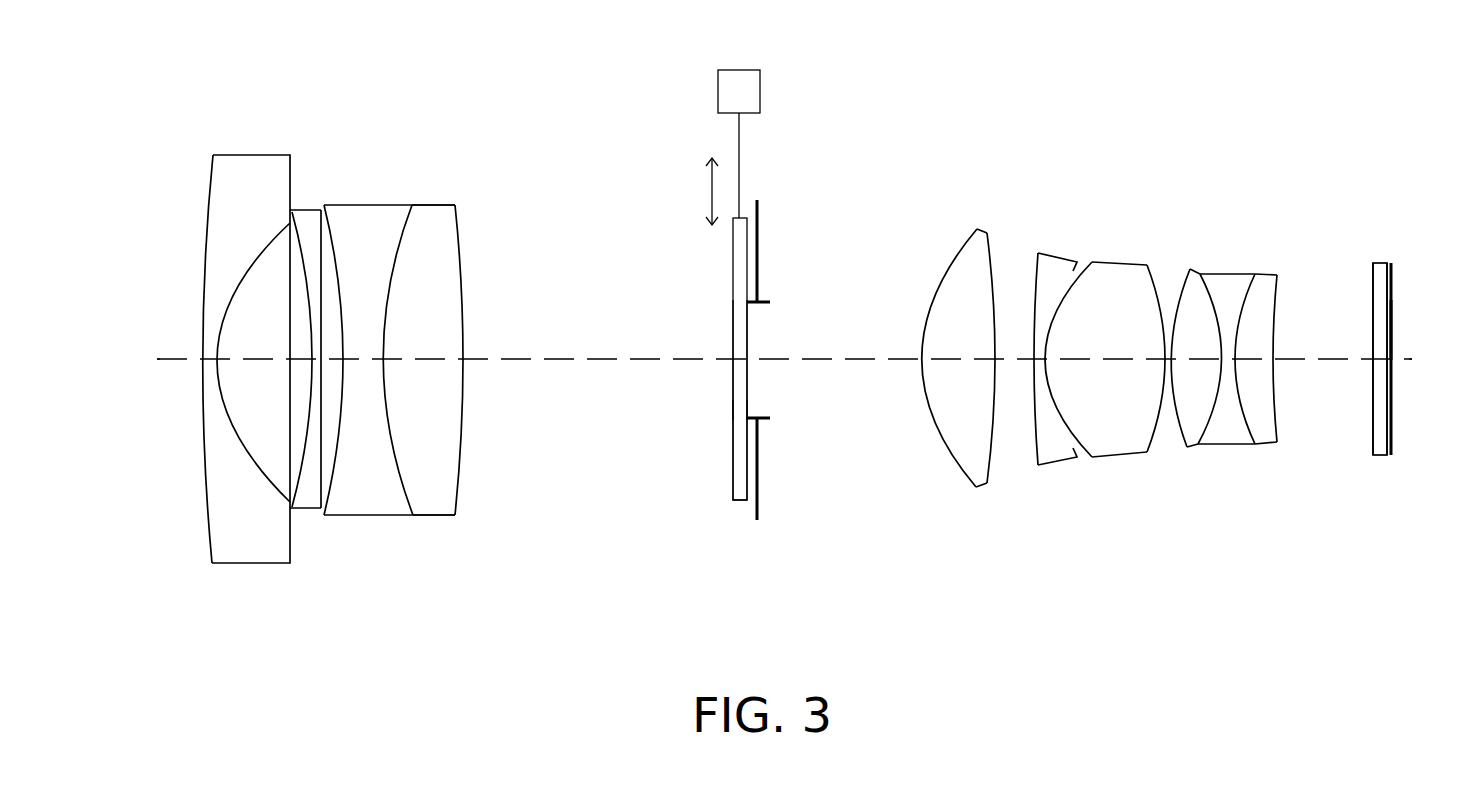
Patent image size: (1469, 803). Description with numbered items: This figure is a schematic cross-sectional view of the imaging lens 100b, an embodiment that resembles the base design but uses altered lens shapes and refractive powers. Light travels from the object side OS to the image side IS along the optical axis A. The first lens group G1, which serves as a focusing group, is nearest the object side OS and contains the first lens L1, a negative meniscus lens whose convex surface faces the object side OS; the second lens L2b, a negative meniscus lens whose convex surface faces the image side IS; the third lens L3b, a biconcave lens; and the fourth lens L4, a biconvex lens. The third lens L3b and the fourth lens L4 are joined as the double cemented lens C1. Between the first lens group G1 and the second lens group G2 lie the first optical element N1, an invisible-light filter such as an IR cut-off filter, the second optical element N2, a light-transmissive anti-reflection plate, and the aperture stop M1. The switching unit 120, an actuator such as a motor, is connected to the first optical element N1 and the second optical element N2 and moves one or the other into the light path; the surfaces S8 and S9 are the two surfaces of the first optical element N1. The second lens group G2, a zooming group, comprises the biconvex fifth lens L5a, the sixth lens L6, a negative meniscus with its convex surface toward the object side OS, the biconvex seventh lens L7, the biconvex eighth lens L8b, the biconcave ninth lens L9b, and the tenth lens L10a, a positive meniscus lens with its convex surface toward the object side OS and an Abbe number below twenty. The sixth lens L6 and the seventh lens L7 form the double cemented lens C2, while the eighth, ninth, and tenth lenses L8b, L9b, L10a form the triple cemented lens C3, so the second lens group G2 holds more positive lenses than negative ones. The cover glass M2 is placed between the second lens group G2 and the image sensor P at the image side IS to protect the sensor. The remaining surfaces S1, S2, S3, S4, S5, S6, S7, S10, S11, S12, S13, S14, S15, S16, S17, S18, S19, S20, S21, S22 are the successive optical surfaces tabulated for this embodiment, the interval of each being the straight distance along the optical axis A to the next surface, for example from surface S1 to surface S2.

The imaging lens 100b is at (1350, 652).
The switching unit 120 is at (740, 78).
The optical axis A is at (178, 352).
The object side OS is at (142, 359).
The image side IS is at (1424, 359).
The first lens group G1 is at (400, 621).
The second lens group G2 is at (1242, 562).
The first lens L1 is at (267, 563).
The second lens L2b is at (305, 508).
The third lens L3b is at (370, 515).
The fourth lens L4 is at (433, 515).
The fifth lens L5a is at (980, 472).
The sixth lens L6 is at (1059, 448).
The seventh lens L7 is at (1122, 435).
The eighth lens L8b is at (1197, 432).
The ninth lens L9b is at (1225, 435).
The tenth lens L10a is at (1267, 432).
The cemented lens C1 is at (435, 572).
The cemented lens C2 is at (1147, 517).
The cemented lens C3 is at (1300, 517).
The first optical element N1 is at (738, 468).
The second optical element N2 is at (737, 273).
The aperture stop M1 is at (760, 493).
The cover glass M2 is at (1378, 447).
The image sensor P is at (1392, 417).
The surface S1 is at (205, 232).
The surface S2 is at (253, 250).
The surface S3 is at (293, 250).
The surface S4 is at (317, 250).
The surface S5 is at (337, 262).
The surface S6 is at (398, 248).
The surface S7 is at (460, 247).
The surface S8 is at (732, 377).
The surface S9 is at (748, 377).
The surface S10 is at (758, 233).
The surface S11 is at (945, 268).
The surface S12 is at (993, 267).
The surface S13 is at (1033, 287).
The surface S14 is at (1065, 287).
The surface S15 is at (1157, 287).
The surface S16 is at (1178, 288).
The surface S17 is at (1210, 295).
The surface S18 is at (1247, 297).
The surface S19 is at (1275, 312).
The surface S20 is at (1375, 295).
The surface S21 is at (1387, 280).
The surface S22 is at (1392, 332).